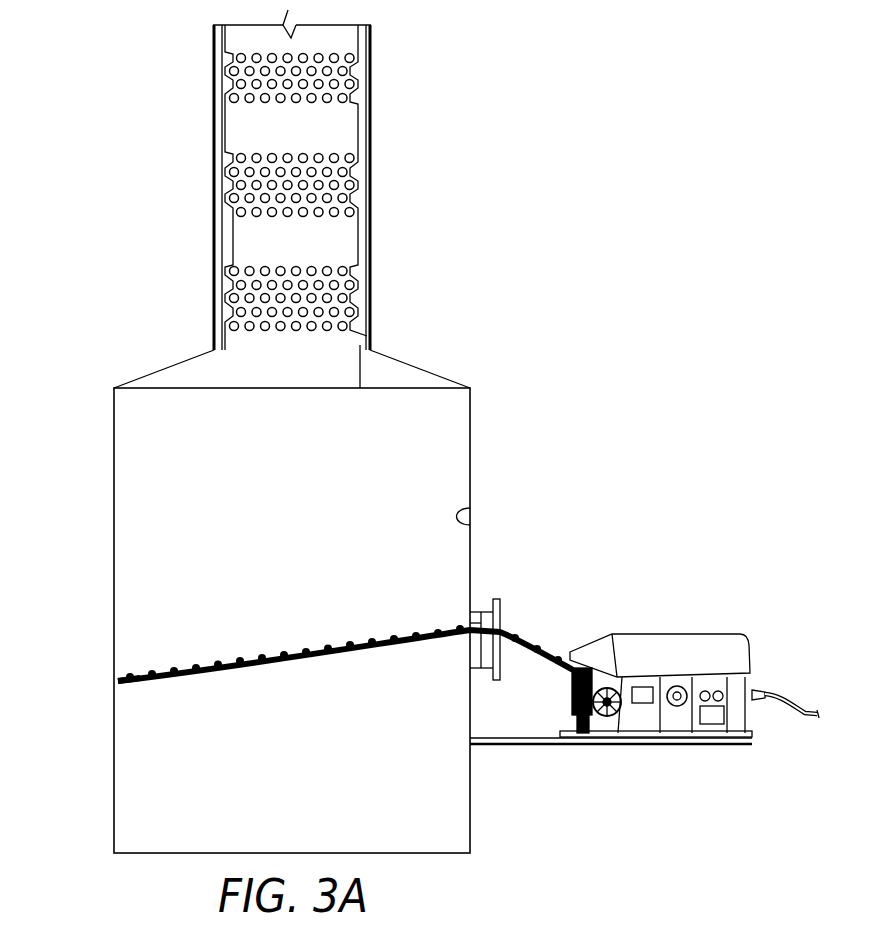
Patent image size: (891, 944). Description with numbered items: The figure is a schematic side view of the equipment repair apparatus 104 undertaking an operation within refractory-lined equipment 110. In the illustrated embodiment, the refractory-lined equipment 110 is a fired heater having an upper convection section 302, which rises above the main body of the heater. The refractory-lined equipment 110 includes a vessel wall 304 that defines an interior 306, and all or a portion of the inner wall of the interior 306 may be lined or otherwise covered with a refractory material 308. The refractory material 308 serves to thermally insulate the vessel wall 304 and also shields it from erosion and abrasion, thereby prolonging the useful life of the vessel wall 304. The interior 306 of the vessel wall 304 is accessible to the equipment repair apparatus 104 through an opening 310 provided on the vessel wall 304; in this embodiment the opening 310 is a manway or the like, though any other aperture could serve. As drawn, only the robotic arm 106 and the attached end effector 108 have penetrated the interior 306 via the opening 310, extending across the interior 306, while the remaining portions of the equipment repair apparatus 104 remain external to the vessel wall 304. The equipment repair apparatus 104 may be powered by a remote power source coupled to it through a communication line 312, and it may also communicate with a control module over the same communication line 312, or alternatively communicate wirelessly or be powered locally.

The upper convection section 302 is at (354, 124).
The refractory-lined equipment 110 is at (507, 380).
The vessel wall 304 is at (470, 450).
The interior 306 is at (313, 511).
The refractory material 308 is at (470, 508).
The opening 310 is at (497, 600).
The robotic arm 106 is at (328, 670).
The end effector 108 is at (122, 668).
The equipment repair apparatus 104 is at (556, 709).
The communication line 312 is at (793, 703).